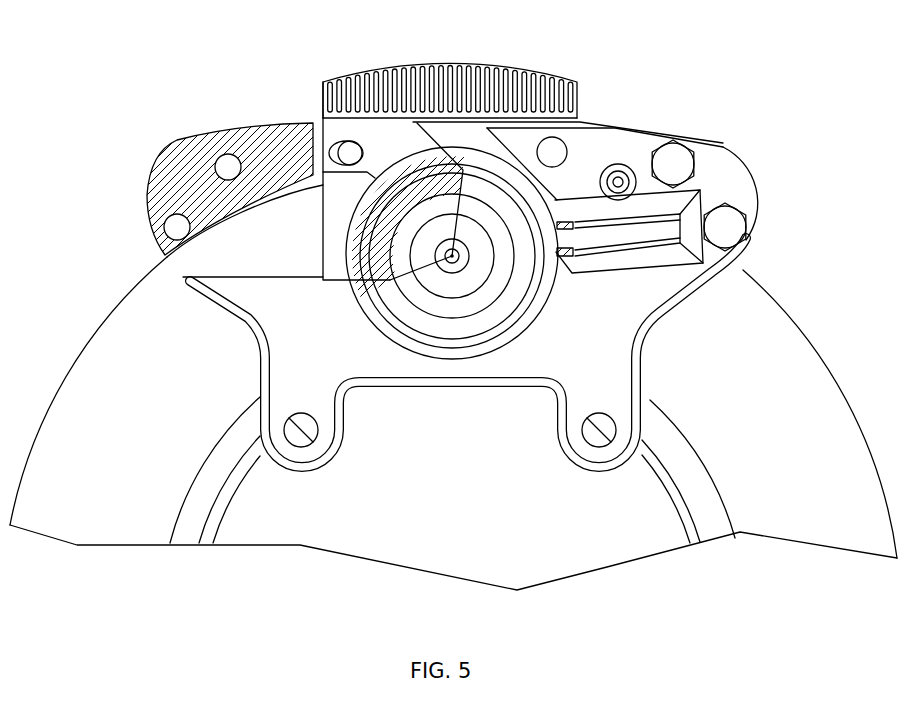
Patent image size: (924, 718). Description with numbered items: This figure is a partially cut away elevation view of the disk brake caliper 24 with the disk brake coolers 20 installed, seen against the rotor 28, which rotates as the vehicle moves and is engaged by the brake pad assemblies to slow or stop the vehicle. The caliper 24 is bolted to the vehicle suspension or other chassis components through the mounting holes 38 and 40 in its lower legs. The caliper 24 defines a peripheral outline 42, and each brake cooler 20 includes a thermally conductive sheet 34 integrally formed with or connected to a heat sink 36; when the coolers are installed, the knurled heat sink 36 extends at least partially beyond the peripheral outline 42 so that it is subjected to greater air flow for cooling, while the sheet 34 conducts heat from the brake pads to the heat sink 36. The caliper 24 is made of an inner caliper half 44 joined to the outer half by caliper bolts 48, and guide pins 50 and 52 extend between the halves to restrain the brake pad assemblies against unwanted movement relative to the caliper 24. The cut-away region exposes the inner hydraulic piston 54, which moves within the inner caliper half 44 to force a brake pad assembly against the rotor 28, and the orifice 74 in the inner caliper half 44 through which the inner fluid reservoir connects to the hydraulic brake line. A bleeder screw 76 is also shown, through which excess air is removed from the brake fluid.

The disk brake cooler 20 is at (501, 61).
The heat sink 36 is at (440, 70).
The disk brake caliper 24 is at (608, 312).
The rotor 28 is at (768, 375).
The thermally conductive sheet 34 is at (333, 192).
The peripheral outline 42 is at (237, 147).
The guide pin 52 is at (350, 153).
The inner caliper half 44 is at (353, 256).
The inner hydraulic piston 54 is at (383, 230).
The orifice 74 is at (452, 258).
The guide pin 50 is at (552, 153).
The bleeder screw 76 is at (620, 180).
The caliper bolt 48 is at (725, 227).
The mounting hole 38 is at (303, 452).
The mounting hole 40 is at (590, 452).